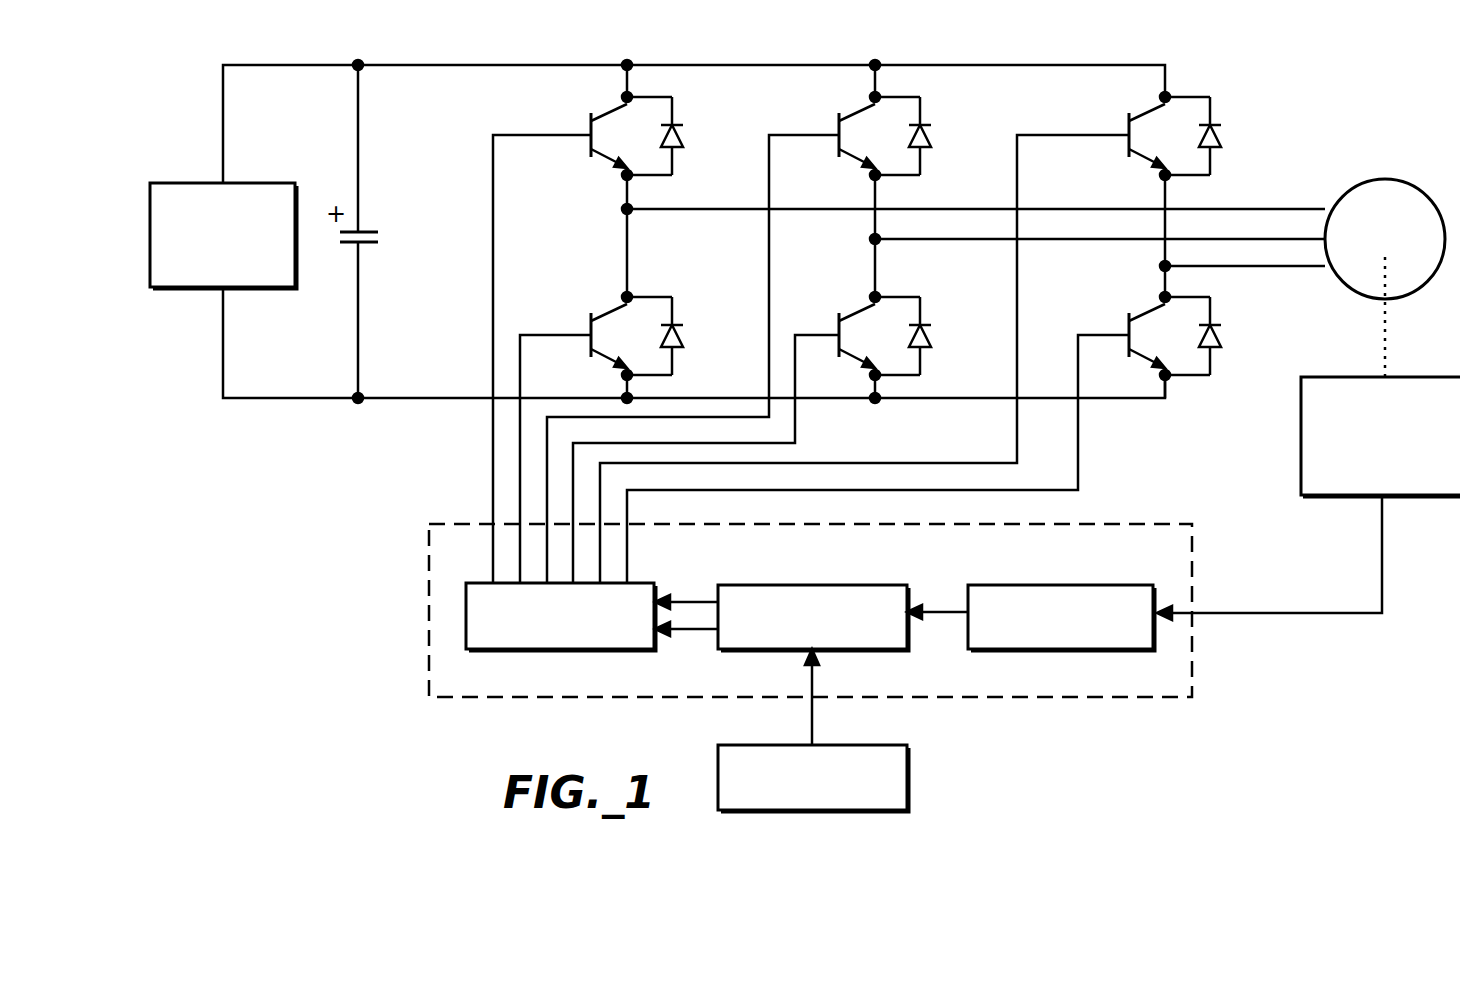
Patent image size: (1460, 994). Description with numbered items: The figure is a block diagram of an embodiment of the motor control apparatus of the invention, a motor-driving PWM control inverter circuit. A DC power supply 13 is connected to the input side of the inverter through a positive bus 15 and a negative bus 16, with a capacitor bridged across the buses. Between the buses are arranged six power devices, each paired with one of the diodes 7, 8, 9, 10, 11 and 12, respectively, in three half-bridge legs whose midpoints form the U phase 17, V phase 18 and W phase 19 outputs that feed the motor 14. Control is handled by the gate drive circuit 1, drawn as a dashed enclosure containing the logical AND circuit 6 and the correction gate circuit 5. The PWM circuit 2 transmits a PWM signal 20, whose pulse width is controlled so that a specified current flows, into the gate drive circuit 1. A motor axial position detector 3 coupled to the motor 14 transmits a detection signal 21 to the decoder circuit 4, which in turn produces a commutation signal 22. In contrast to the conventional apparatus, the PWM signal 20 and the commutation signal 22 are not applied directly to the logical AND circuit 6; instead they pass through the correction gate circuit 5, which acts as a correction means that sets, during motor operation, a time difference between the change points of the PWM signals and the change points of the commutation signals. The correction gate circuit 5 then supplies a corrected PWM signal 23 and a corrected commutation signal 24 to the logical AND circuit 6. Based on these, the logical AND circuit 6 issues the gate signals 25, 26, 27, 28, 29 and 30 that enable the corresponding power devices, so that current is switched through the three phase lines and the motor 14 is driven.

The gate drive circuit 1 is at (428, 604).
The PWM circuit 2 is at (910, 770).
The motor axial position detector 3 is at (1407, 377).
The decoder circuit 4 is at (1055, 585).
The correction gate circuit 5 is at (812, 585).
The logical AND circuit 6 is at (557, 650).
The diode 7 is at (670, 136).
The diode 8 is at (670, 336).
The diode 9 is at (917, 136).
The diode 10 is at (922, 336).
The diode 11 is at (1213, 136).
The diode 12 is at (1213, 336).
The DC power supply 13 is at (247, 183).
The motor 14 is at (1375, 181).
The positive bus 15 is at (223, 118).
The negative bus 16 is at (393, 398).
The U phase 17 is at (660, 209).
The V phase 18 is at (912, 239).
The W phase 19 is at (1237, 266).
The PWM signal 20 is at (812, 708).
The detection signal 21 is at (1235, 613).
The commutation signal 22 is at (940, 612).
The corrected PWM signal 23 is at (690, 632).
The corrected commutation signal 24 is at (690, 600).
The gate signal 25 is at (513, 135).
The gate signal 26 is at (530, 335).
The gate signal 27 is at (775, 135).
The gate signal 28 is at (803, 335).
The gate signal 29 is at (1063, 135).
The gate signal 30 is at (1092, 335).